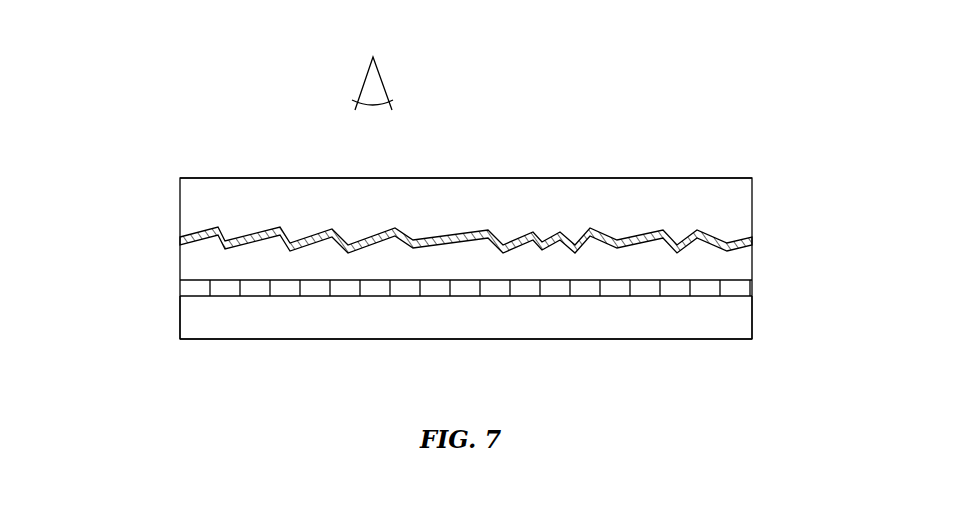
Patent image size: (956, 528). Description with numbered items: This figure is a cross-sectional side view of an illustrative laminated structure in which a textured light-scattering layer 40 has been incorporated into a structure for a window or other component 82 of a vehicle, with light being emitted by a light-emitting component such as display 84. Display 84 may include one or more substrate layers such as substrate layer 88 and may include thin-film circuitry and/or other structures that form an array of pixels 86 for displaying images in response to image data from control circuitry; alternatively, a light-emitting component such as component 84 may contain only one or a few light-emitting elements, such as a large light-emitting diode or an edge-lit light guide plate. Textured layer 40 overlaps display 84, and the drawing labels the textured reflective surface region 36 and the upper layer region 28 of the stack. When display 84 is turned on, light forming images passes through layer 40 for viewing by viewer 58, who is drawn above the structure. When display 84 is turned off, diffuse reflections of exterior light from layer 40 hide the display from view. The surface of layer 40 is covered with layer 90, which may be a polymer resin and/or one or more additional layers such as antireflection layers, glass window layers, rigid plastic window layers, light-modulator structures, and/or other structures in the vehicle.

The viewer 58 is at (386, 77).
The component 82 is at (115, 193).
The layer 90 is at (742, 192).
The textured reflective layer 36 is at (724, 230).
The upper layer region 28 is at (743, 263).
The textured light-scattering layer 40 is at (169, 240).
The display 84 is at (169, 280).
The pixels 86 is at (706, 287).
The substrate layer 88 is at (692, 320).